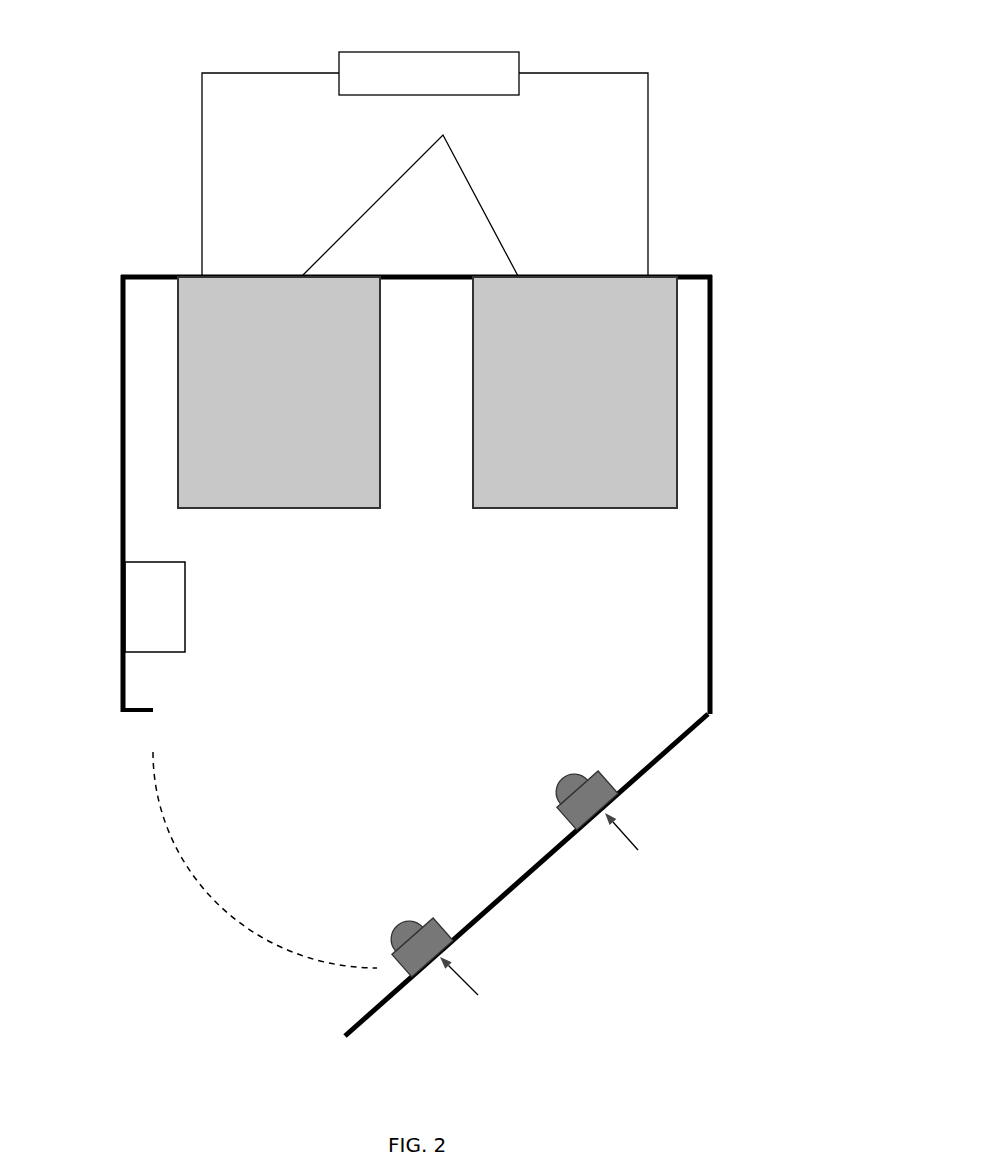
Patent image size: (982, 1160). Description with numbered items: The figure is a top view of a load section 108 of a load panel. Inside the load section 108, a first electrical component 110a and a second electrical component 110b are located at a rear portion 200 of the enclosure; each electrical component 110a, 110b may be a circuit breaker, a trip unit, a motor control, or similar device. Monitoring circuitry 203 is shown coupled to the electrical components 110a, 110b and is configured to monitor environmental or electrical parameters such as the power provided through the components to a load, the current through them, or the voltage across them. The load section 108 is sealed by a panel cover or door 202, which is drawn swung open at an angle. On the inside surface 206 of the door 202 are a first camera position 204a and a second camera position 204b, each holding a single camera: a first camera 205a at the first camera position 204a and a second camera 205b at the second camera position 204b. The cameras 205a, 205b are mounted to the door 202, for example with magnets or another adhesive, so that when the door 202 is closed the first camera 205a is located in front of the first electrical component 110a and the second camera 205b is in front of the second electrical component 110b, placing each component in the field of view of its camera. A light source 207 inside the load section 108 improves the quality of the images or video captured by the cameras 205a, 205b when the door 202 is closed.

The load section 108 is at (102, 202).
The monitoring circuitry 203 is at (508, 62).
The rear portion 200 is at (410, 195).
The first electrical component 110a is at (278, 290).
The second electrical component 110b is at (567, 290).
The light source 207 is at (155, 607).
The door 202 is at (496, 875).
The inside surface 206 is at (502, 893).
The first camera 205a is at (407, 950).
The second camera 205b is at (592, 778).
The first camera position 204a is at (503, 1016).
The second camera position 204b is at (665, 875).